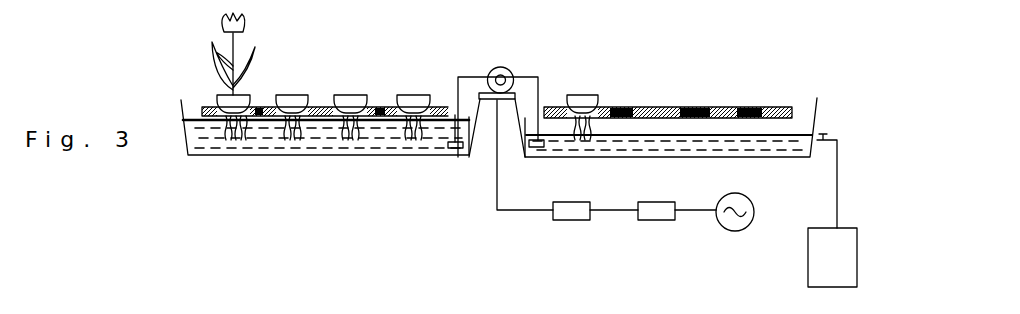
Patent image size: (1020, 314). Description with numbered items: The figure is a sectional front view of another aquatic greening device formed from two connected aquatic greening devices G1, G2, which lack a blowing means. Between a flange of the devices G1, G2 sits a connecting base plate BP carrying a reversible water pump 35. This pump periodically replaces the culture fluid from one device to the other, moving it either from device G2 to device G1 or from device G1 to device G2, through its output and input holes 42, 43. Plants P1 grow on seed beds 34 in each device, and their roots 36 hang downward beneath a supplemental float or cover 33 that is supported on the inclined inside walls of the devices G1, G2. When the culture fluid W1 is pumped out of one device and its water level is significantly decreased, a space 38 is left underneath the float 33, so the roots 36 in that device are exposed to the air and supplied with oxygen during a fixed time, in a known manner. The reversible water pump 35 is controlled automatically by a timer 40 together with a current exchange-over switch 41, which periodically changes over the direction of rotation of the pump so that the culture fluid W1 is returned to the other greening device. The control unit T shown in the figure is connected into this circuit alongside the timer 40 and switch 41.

The supplemental float or cover 33 is at (668, 110).
The seed beds 34 is at (297, 100).
The reversible water pump 35 is at (525, 54).
The roots 36 is at (247, 132).
The space 38 is at (752, 134).
The timer 40 is at (657, 220).
The current exchange-over switch 41 is at (573, 220).
The output hole 42 is at (455, 148).
The input hole 43 is at (538, 147).
The aquatic greening device G1 is at (406, 79).
The aquatic greening device G2 is at (663, 69).
The plant P1 is at (238, 50).
The nutrient solution (first tank) W1 is at (317, 145).
The connecting base plate BP is at (485, 100).
The timer/controller T is at (832, 210).